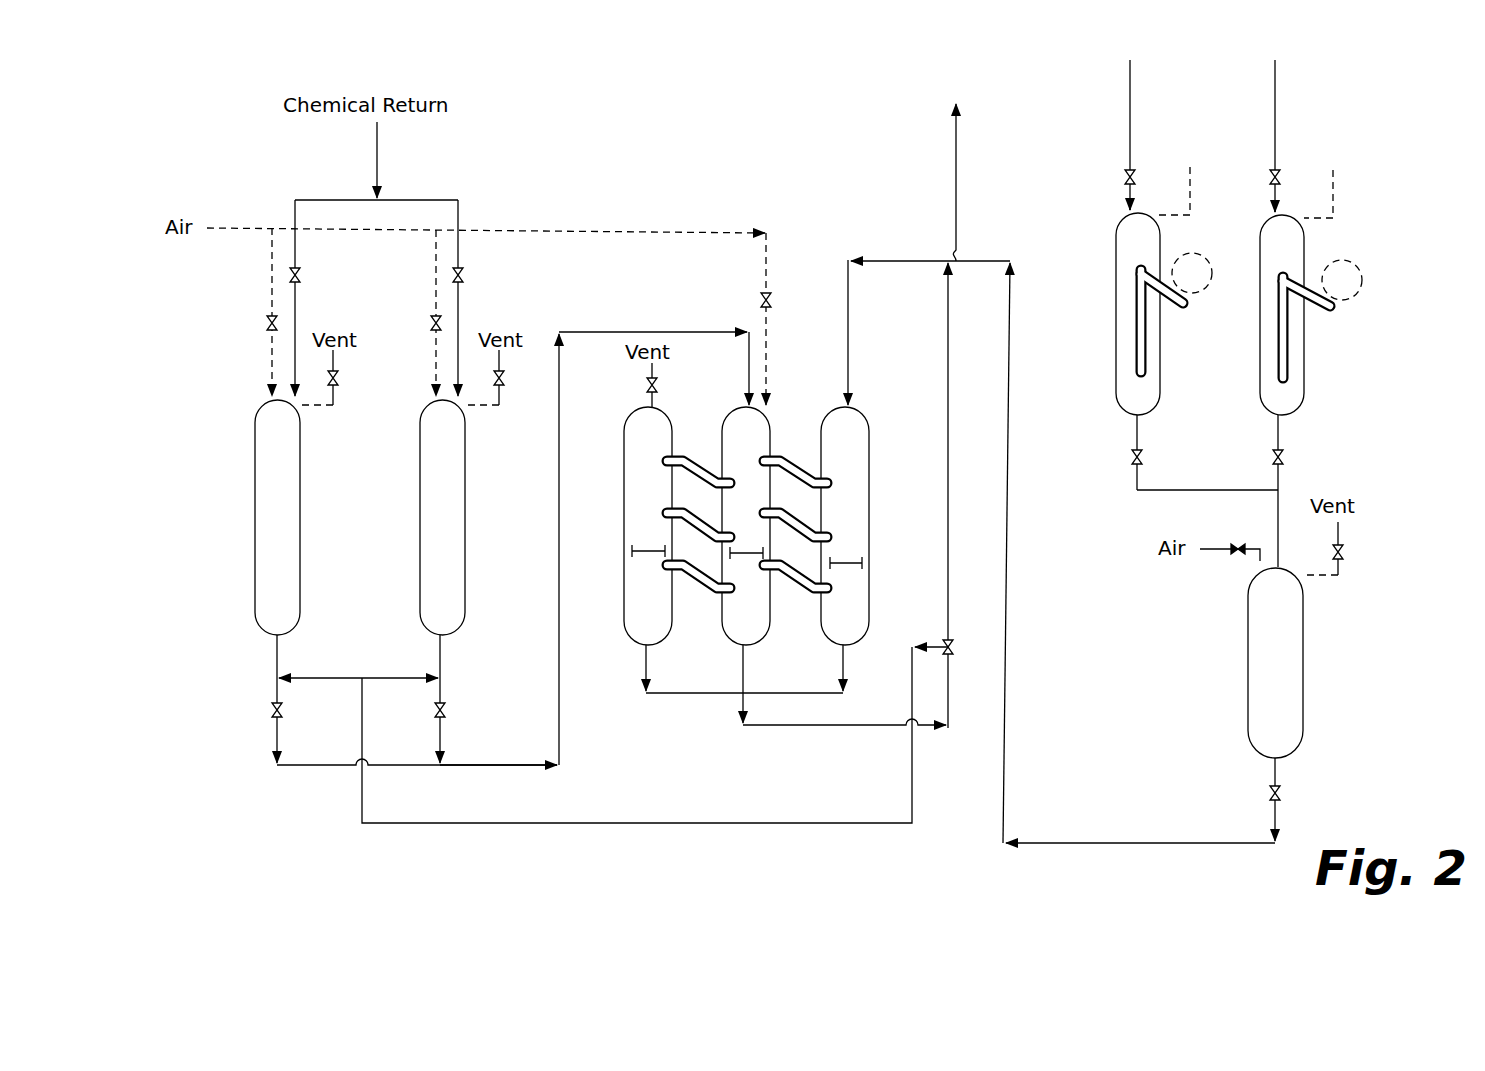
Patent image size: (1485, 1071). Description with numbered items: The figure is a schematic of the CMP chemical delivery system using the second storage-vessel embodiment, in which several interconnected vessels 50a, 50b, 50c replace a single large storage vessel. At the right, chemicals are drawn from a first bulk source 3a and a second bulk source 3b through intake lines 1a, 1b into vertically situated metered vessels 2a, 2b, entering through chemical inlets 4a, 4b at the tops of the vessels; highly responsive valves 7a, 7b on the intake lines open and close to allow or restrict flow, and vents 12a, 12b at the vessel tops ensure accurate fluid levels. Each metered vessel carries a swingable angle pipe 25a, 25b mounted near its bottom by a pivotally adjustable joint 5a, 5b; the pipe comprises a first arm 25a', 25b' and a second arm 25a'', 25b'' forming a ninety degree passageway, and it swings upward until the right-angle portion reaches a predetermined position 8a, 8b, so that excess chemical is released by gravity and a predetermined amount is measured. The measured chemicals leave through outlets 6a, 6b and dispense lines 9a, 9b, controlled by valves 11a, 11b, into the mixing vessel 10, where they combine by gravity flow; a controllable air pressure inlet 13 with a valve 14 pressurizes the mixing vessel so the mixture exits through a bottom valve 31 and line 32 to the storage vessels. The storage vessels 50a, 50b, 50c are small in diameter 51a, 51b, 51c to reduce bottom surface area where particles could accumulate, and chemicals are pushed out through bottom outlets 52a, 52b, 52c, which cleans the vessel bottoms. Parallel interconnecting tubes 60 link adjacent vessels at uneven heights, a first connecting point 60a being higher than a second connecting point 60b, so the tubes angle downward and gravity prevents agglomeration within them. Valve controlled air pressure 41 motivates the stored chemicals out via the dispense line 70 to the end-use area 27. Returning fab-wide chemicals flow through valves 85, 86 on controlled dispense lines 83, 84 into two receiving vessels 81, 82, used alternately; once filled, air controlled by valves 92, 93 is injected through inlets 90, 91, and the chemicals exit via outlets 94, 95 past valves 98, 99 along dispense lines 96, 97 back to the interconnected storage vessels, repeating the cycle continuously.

The mixing vessel 10 is at (1275, 663).
The controllable air pressure inlet 13 is at (1230, 569).
The valve 14 is at (1237, 536).
The outlet valve 31 is at (1291, 799).
The outlet line 32 is at (1140, 830).
The end-use area 27 is at (950, 150).
The intake line 1a is at (1096, 155).
The second intake line 1b is at (1289, 156).
The first metered vessel 2a is at (1122, 314).
The second metered vessel 2b is at (1266, 315).
The first bulk source 3a is at (1139, 62).
The second bulk source 3b is at (1284, 64).
The chemical inlet 4a is at (1110, 212).
The chemical inlet 4b is at (1255, 214).
The pivotally adjustable joint 5a is at (1131, 376).
The pivotally adjustable joint 5b is at (1293, 379).
The outlet line of vessel 2a 6a is at (1118, 451).
The outlet line of vessel 2b 6b is at (1297, 491).
The highly responsive valve 7a is at (1110, 182).
The highly responsive valve 7b is at (1257, 183).
The predetermined position 8a is at (1150, 267).
The predetermined position 8b is at (1293, 273).
The dispense line 9a is at (1135, 481).
The dispense line 9b is at (1283, 480).
The valve 11a is at (1159, 458).
The valve 11b is at (1254, 458).
The vent 12a is at (1176, 179).
The vent 12b is at (1320, 183).
The swingable angle pipe 25a is at (1101, 321).
The first arm 25a' is at (1077, 319).
The second arm 25a'' is at (1204, 349).
The swingable angle pipe 25b is at (1338, 336).
The first arm 25b' is at (1344, 332).
The second arm 25b'' is at (1404, 310).
The valve controlled air pressure 41 is at (486, 219).
The interconnected vessel 50a is at (626, 526).
The interconnected vessel 50b is at (726, 526).
The interconnected vessel 50c is at (824, 526).
The diameter 51a is at (646, 557).
The diameter 51b is at (747, 561).
The diameter 51c is at (849, 572).
The outlet 52a is at (619, 665).
The outlet 52b is at (718, 681).
The outlet 52c is at (818, 665).
The interconnecting tubes 60 is at (698, 534).
The first connecting point 60a is at (662, 463).
The second connecting point 60b is at (741, 485).
The dispense line 70 is at (826, 715).
The vessel 81 is at (263, 517).
The vessel 82 is at (428, 517).
The controlled dispense line 83 is at (310, 298).
The controlled dispense line 84 is at (474, 298).
The valve 85 is at (309, 275).
The valve 86 is at (471, 275).
The inlet 90 is at (255, 312).
The inlet 91 is at (419, 313).
The valve 92 is at (256, 324).
The valve 93 is at (419, 324).
The outlet 94 is at (295, 699).
The outlet 95 is at (457, 699).
The dispense line 96 is at (268, 742).
The dispense line 97 is at (431, 742).
The valve 98 is at (292, 711).
The valve 99 is at (455, 711).